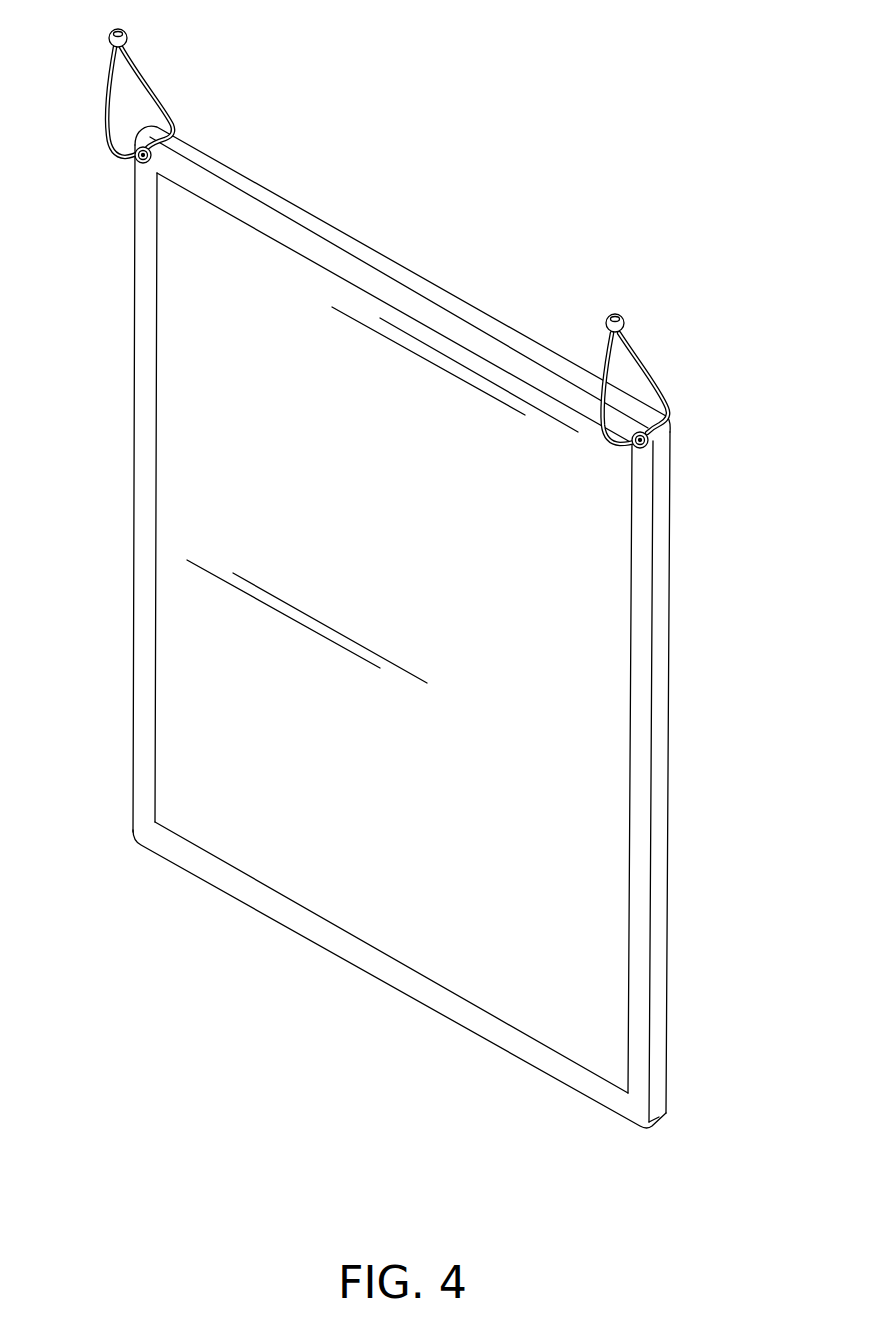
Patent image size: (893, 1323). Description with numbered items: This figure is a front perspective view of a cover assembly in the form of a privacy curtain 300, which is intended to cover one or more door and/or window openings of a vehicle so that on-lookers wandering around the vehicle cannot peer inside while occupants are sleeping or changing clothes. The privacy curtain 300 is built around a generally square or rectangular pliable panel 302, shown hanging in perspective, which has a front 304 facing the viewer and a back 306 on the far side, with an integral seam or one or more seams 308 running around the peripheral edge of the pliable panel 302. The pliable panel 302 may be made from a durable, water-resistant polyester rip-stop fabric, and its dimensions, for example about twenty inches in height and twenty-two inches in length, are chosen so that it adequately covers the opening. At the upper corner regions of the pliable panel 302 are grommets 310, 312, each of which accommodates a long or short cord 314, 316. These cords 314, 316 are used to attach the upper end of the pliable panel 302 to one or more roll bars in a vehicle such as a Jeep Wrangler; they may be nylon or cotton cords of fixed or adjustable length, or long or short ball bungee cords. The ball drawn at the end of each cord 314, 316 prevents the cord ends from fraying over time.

The privacy curtain 300 is at (510, 209).
The pliable panel 302 is at (672, 692).
The front 304 is at (612, 863).
The back 306 is at (312, 182).
The seams 308 is at (642, 1027).
The grommet 310 is at (137, 160).
The grommet 312 is at (650, 444).
The long or short cord 314 is at (130, 72).
The long or short cord 316 is at (633, 368).